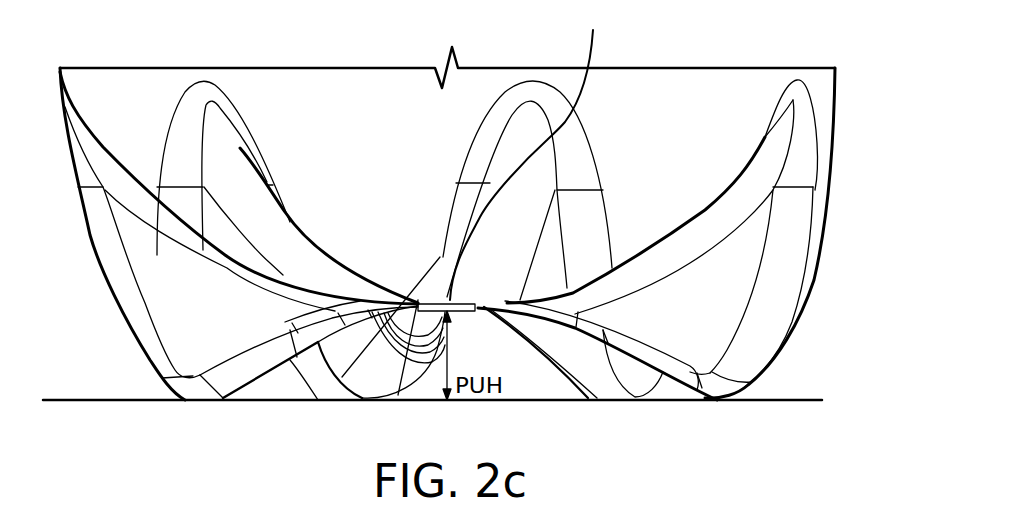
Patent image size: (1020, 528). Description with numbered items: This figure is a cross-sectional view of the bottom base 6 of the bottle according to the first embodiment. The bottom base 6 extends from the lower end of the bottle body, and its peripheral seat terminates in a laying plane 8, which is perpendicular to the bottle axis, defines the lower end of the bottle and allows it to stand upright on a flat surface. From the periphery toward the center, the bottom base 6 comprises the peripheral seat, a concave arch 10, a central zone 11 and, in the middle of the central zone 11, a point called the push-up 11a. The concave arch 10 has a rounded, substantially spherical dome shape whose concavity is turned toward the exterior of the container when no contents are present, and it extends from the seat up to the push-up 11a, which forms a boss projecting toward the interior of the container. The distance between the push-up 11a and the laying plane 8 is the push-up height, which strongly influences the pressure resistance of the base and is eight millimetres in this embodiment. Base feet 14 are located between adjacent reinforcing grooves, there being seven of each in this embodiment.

The bottom base 6 is at (826, 171).
The laying plane 8 is at (562, 400).
The concave arch 10 is at (317, 400).
The central zone 11 is at (495, 312).
The push-up 11a is at (531, 152).
The base feet 14 is at (147, 345).